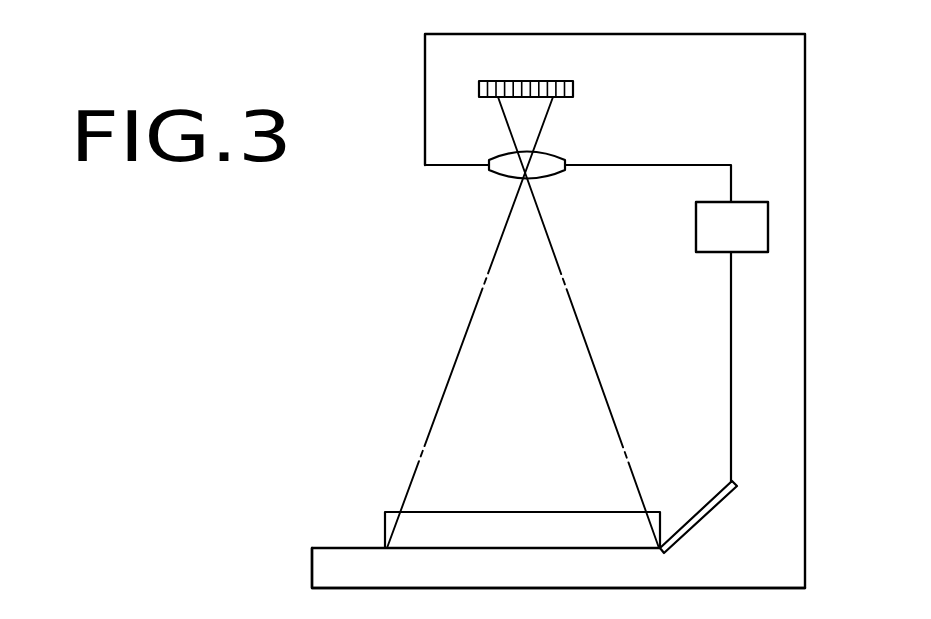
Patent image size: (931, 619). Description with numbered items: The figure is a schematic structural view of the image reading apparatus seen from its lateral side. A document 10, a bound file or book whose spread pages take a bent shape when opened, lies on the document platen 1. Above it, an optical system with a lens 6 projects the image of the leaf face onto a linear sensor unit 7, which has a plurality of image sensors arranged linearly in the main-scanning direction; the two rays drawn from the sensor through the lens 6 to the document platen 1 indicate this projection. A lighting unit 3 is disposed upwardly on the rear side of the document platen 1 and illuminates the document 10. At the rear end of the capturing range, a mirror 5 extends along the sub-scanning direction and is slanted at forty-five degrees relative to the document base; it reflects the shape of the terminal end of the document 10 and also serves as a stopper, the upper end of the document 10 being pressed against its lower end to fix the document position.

The document platen 1 is at (332, 545).
The document 10 is at (521, 510).
The mirror 5 is at (697, 509).
The lighting unit 3 is at (697, 223).
The lens 6 is at (488, 172).
The linear sensor unit 7 is at (575, 87).